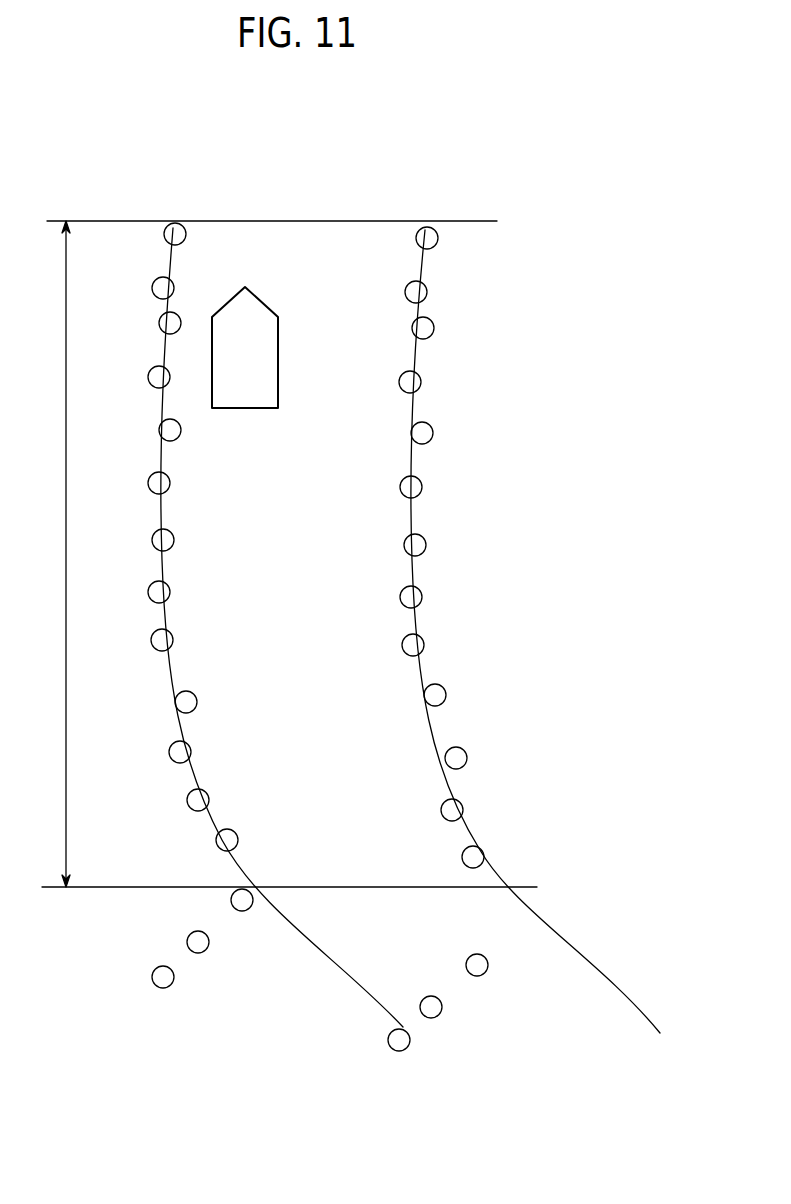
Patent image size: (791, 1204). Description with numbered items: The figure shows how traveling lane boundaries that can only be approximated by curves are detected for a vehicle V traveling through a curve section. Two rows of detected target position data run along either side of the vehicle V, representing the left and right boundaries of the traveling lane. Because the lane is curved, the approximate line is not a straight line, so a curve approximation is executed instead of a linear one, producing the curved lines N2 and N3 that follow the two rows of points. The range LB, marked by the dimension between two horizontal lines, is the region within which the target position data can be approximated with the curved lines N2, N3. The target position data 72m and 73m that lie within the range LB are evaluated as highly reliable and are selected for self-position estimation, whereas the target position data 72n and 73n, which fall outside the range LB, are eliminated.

The range LB is at (50, 554).
The vehicle V is at (279, 353).
The curved line N2 is at (317, 948).
The curved line N3 is at (543, 918).
The target position data 72m is at (238, 840).
The target position data 72n is at (209, 942).
The target position data 73m is at (484, 857).
The target position data 73n is at (488, 965).